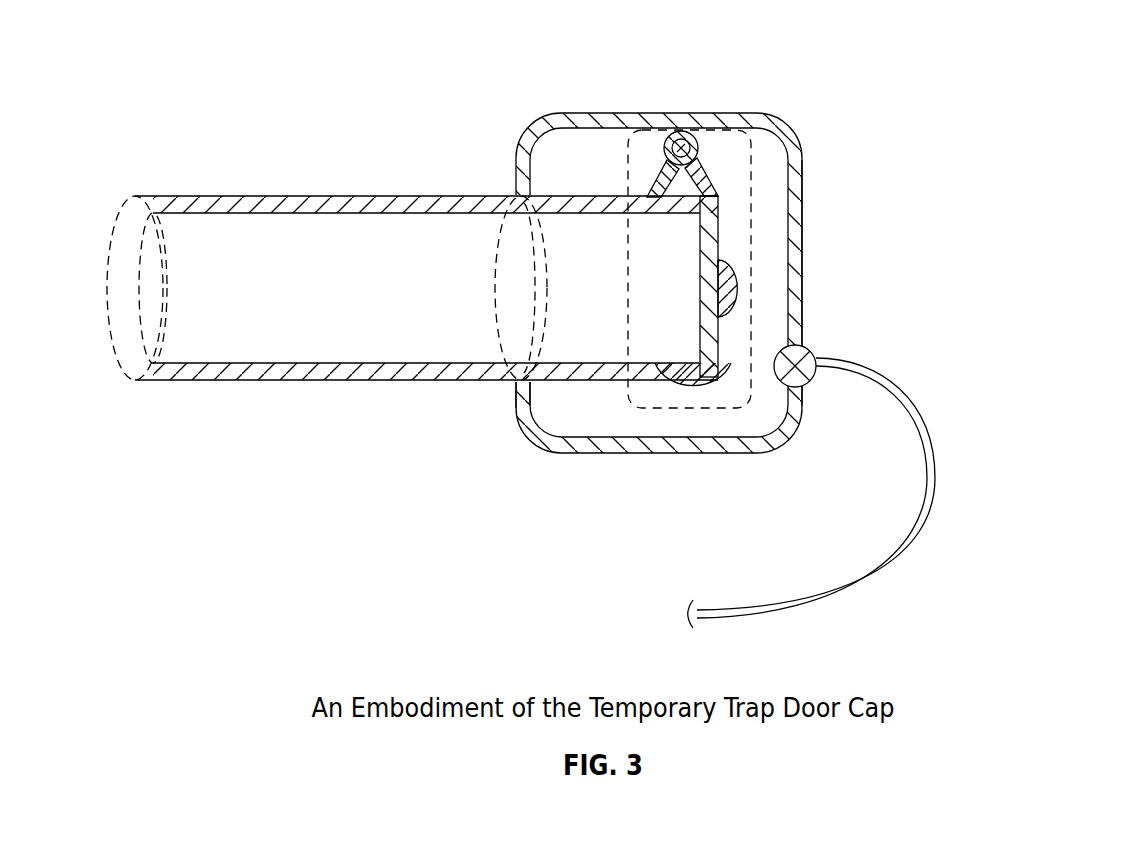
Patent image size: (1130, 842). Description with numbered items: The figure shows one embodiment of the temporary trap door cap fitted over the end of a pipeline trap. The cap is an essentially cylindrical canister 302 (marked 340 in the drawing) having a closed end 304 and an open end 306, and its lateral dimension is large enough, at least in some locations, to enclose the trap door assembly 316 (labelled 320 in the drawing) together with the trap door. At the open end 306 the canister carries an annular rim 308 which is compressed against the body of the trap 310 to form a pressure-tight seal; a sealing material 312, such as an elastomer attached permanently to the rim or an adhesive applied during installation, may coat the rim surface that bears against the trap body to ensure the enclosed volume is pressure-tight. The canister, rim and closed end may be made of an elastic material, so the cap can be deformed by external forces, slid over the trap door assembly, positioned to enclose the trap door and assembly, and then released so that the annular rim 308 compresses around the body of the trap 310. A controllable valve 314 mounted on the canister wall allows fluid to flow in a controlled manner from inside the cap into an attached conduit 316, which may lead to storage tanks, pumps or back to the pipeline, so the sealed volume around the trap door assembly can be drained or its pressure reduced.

The canister 302 is at (200, 196).
The closed end 304 is at (720, 221).
The open end 306 is at (802, 240).
The annular rim 308 is at (519, 305).
The body of the trap 310 is at (516, 413).
The sealing material 312 is at (498, 255).
The controllable valve 314 is at (806, 349).
The conduit 316 is at (935, 483).
The Trap Door Assembly 320 is at (690, 409).
The Canister 340 is at (658, 113).